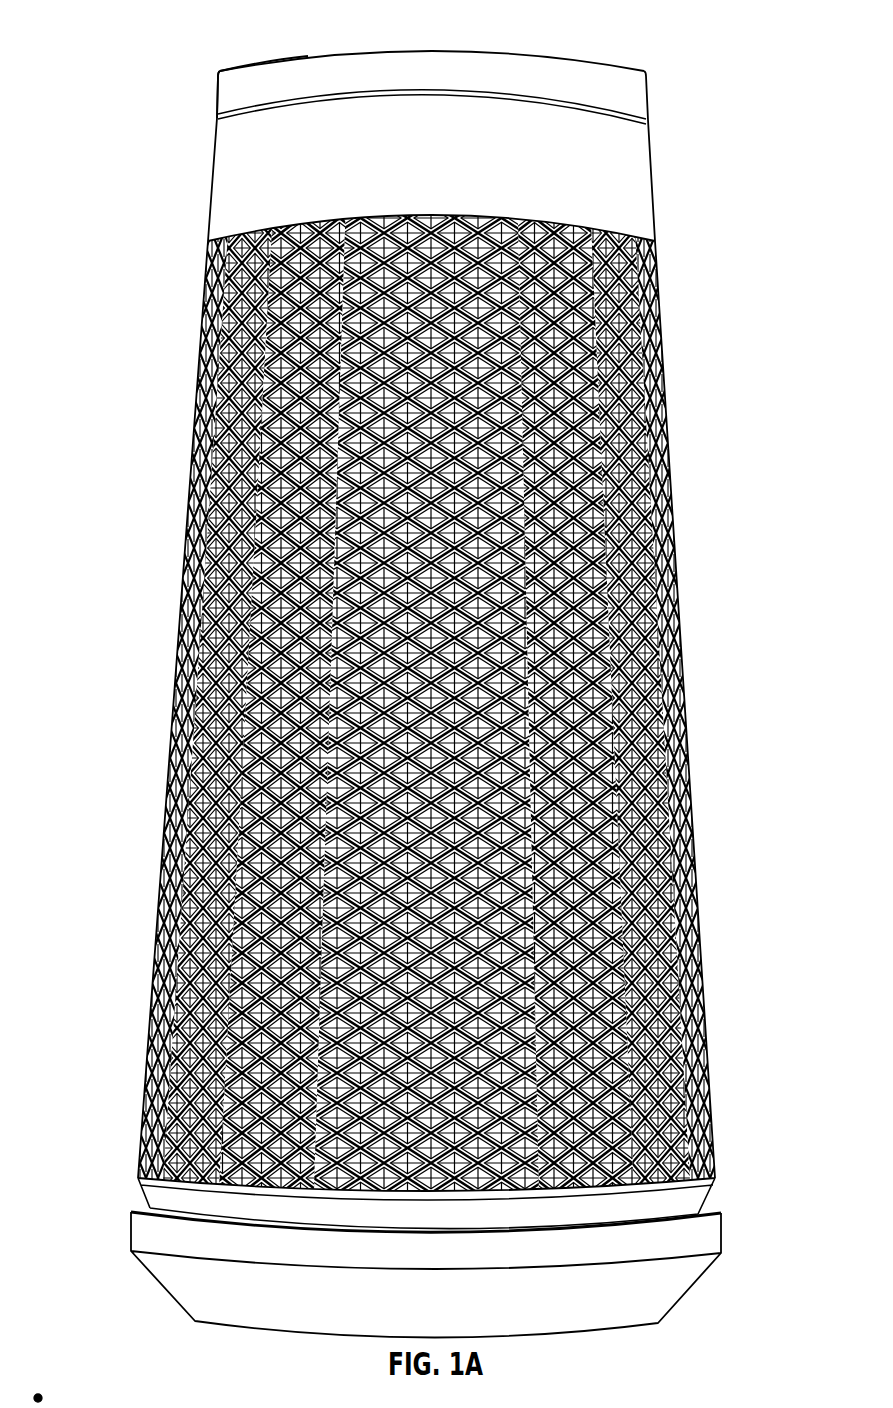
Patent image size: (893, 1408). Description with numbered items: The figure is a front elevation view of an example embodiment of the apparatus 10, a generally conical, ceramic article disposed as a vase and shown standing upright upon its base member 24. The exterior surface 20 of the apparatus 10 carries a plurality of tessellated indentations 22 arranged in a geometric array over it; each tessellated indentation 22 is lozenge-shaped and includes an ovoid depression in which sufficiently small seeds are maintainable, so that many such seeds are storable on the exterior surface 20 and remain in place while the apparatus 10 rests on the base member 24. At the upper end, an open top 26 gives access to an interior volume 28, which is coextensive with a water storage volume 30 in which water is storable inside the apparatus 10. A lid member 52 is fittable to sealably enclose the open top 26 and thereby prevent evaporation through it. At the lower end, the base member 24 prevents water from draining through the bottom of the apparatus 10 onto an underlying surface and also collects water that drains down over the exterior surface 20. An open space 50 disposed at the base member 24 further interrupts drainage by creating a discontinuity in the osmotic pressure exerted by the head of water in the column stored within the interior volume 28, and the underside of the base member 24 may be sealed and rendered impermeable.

The apparatus 10 is at (710, 16).
The exterior surface 20 is at (122, 657).
The tessellated indentations 22 is at (652, 407).
The base member 24 is at (168, 1277).
The open top 26 is at (592, 31).
The interior volume 28 is at (317, 25).
The water storage volume 30 is at (244, 35).
The open space 50 is at (119, 1185).
The lid member 52 is at (218, 85).